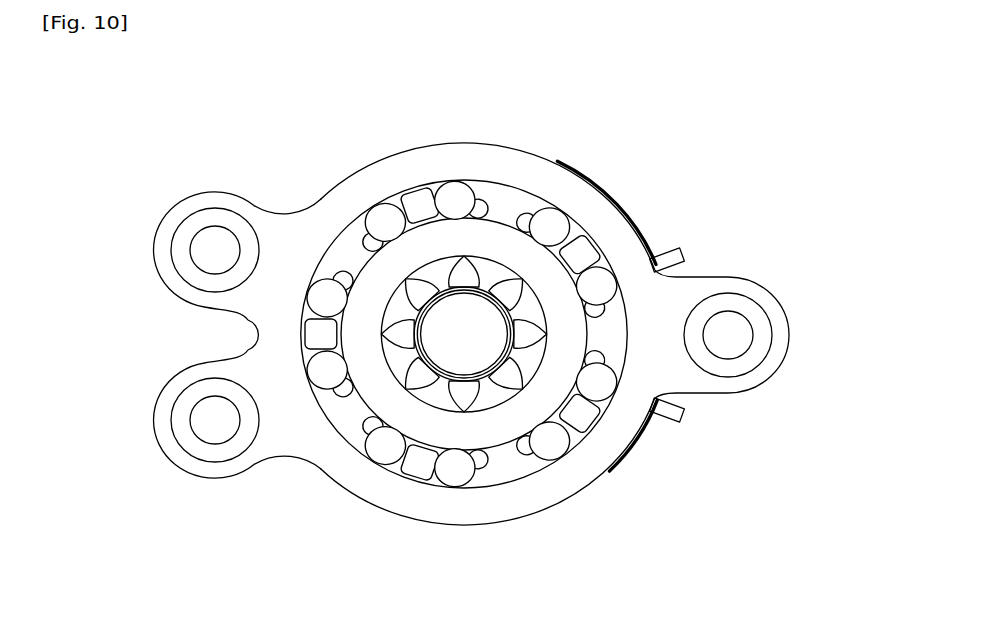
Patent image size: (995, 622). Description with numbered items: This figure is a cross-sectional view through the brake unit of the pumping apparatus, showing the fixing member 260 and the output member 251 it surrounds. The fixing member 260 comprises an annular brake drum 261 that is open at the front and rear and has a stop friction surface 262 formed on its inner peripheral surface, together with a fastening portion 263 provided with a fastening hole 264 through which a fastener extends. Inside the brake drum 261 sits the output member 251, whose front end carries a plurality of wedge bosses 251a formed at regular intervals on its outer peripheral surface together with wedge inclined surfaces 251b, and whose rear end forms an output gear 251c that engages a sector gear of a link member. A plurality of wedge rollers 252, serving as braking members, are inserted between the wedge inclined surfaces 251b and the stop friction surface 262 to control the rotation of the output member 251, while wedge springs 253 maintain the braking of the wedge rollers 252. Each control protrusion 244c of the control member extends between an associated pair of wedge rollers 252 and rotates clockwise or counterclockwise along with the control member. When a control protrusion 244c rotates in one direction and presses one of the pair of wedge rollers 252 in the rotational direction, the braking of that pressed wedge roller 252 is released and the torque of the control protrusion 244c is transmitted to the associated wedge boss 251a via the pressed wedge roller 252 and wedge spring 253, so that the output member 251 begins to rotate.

The control protrusion 244c is at (413, 200).
The output member 251 is at (434, 330).
The wedge boss 251a is at (528, 207).
The wedge inclined surface 251b is at (470, 233).
The output gear 251c is at (505, 382).
The wedge roller 252 is at (453, 197).
The wedge spring 253 is at (485, 200).
The fixing member 260 is at (270, 205).
The brake drum 261 is at (583, 203).
The stop friction surface 262 is at (649, 259).
The fastening portion 263 is at (733, 276).
The fastening hole 264 is at (757, 337).